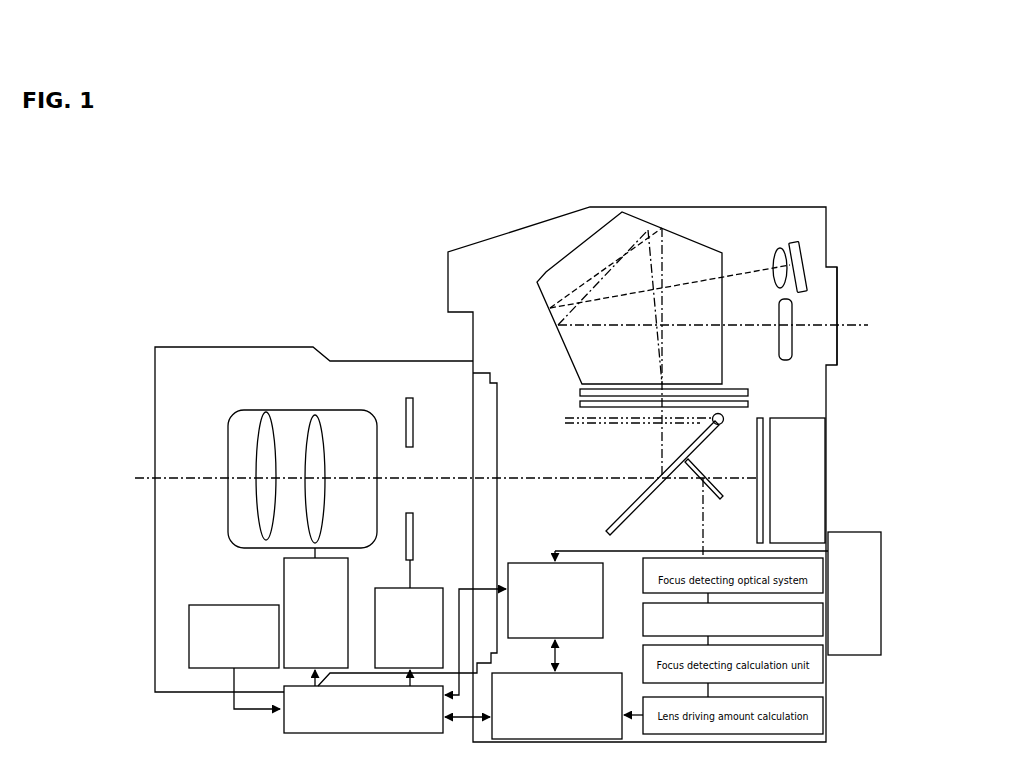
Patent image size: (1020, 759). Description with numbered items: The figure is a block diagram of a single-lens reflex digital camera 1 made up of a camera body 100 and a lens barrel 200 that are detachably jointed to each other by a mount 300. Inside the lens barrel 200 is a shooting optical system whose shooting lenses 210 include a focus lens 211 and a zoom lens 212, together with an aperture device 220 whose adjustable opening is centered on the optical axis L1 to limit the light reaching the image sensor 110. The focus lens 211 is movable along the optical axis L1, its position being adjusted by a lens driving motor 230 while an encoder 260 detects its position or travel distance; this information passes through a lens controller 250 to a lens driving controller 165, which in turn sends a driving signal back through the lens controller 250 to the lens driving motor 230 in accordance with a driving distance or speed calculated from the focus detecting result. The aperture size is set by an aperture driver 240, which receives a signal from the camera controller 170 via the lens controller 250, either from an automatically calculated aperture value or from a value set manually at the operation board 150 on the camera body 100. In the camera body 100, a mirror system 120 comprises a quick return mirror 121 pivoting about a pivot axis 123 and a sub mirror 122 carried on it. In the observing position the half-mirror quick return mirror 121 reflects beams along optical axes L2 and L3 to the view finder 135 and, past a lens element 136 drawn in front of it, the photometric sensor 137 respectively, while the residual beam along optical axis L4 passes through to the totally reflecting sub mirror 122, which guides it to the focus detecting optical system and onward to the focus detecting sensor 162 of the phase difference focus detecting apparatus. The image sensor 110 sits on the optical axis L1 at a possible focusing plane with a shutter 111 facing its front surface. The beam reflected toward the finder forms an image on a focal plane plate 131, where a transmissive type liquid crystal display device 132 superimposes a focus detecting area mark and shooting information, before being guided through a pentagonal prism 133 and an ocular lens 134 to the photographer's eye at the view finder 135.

The single-lens reflex digital camera 1 is at (816, 184).
The camera body 100 is at (552, 213).
The lens barrel 200 is at (200, 344).
The mount 300 is at (483, 422).
The shooting lenses 210 is at (360, 322).
The focus lens 211 is at (315, 415).
The zoom lens 212 is at (266, 412).
The aperture device 220 is at (410, 398).
The lens driving motor 230 is at (316, 617).
The aperture driver 240 is at (409, 637).
The lens controller 250 is at (395, 661).
The encoder 260 is at (234, 657).
The image sensor 110 is at (828, 473).
The shutter 111 is at (762, 439).
The mirror system 120 is at (585, 428).
The quick return mirror 121 is at (648, 492).
The sub mirror 122 is at (695, 470).
The pivot axis 123 is at (722, 426).
The focal plane plate 131 is at (750, 396).
The transmissive type liquid crystal display device 132 is at (735, 389).
The pentagonal prism 133 is at (548, 280).
The ocular lens 134 is at (792, 330).
The view finder 135 is at (837, 285).
The photometric lens 136 is at (778, 248).
The photometric sensor 137 is at (792, 242).
The operation board 150 is at (855, 532).
The focus detecting sensor 162 is at (733, 619).
The lens driving controller 165 is at (567, 706).
The camera controller 170 is at (555, 611).
The optical axis L1 is at (146, 478).
The optical axis L2 is at (868, 325).
The optical axis L3 is at (752, 265).
The optical axis L4 is at (707, 535).